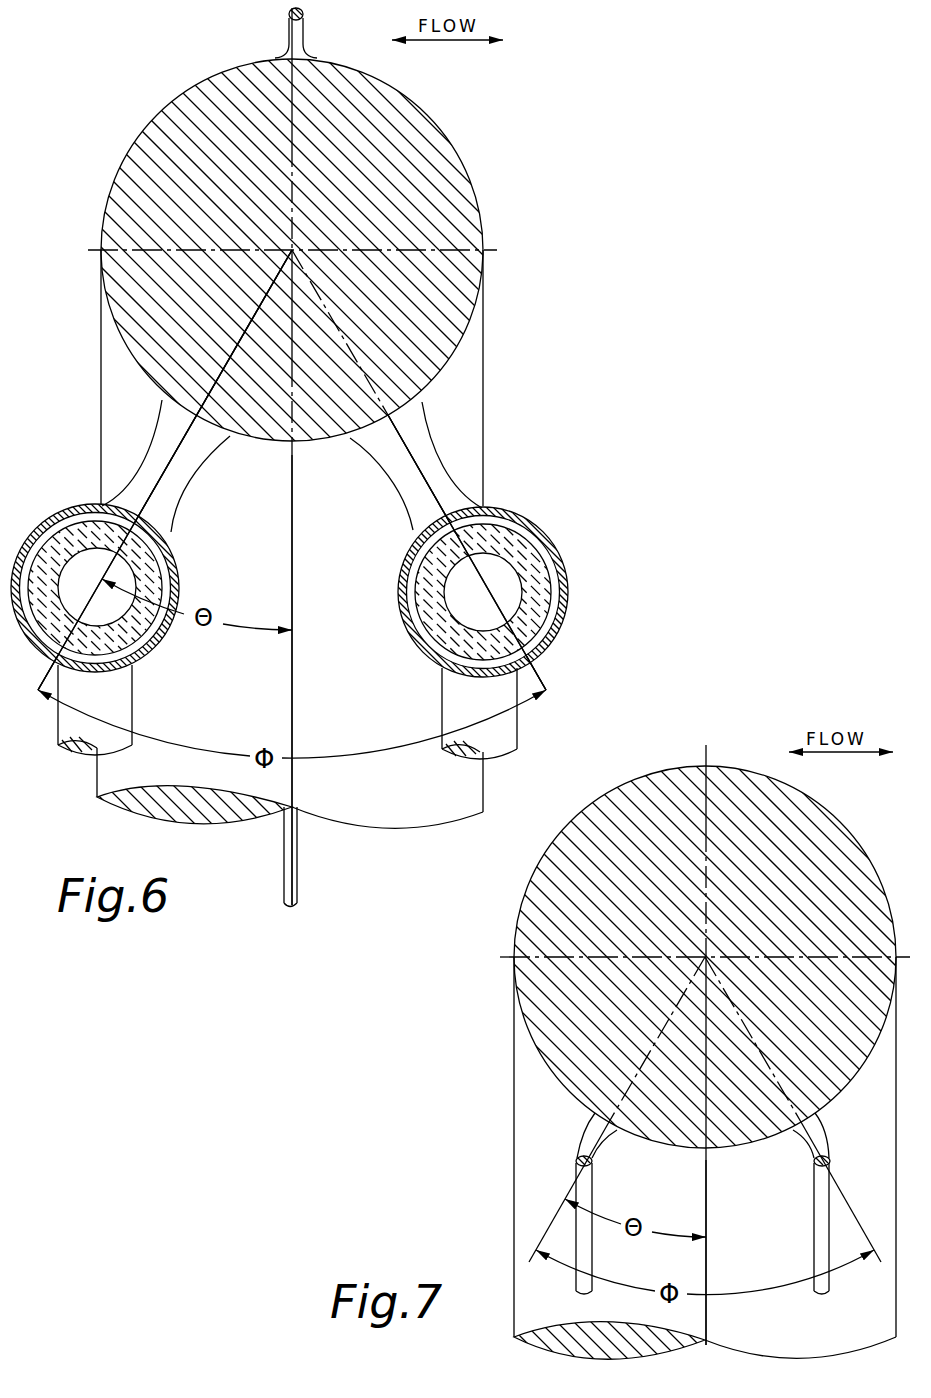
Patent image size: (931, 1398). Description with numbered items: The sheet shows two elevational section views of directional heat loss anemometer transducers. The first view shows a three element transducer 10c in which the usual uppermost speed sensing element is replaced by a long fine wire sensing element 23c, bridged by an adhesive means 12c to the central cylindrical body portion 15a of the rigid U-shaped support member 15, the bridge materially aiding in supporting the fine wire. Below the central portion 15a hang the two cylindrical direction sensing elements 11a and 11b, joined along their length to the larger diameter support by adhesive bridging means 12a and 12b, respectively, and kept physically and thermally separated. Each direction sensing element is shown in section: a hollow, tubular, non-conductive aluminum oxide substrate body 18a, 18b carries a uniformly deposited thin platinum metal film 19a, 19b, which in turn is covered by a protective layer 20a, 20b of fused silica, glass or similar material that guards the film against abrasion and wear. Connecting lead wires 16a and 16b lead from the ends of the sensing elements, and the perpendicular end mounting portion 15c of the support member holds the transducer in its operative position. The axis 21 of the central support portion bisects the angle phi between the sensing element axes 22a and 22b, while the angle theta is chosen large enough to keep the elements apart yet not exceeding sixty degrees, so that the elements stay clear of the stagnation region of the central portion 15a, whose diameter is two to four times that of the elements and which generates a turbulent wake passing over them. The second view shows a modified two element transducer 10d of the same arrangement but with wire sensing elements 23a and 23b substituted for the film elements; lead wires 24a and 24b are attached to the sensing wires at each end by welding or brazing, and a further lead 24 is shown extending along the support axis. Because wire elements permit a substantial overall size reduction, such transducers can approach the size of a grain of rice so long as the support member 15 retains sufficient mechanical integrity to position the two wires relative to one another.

In FIG. 6, the three element transducer 10c is at (111, 186).
In FIG. 7, the two element transducer 10d is at (817, 800).
In FIG. 6, the sensing element 11a is at (151, 522).
In FIG. 6, the sensing element 11b is at (521, 595).
In FIG. 6, the bridging means 12a is at (170, 425).
In FIG. 7, the bridging means 12a is at (600, 1130).
In FIG. 6, the bridging means 12b is at (392, 432).
In FIG. 7, the bridging means 12b is at (806, 1132).
In FIG. 6, the adhesive means 12c is at (305, 42).
In FIG. 6, the support member 15 is at (486, 194).
In FIG. 7, the support member 15 is at (753, 768).
In FIG. 6, the central cylindrical body portion 15a is at (470, 234).
In FIG. 7, the central cylindrical body portion 15a is at (843, 840).
In FIG. 6, the end mounting portion 15c is at (363, 805).
In FIG. 7, the end mounting portion 15c is at (530, 1215).
In FIG. 6, the connecting wire 16a is at (120, 693).
In FIG. 6, the connecting wire 16b is at (455, 702).
In FIG. 6, the substrate body 18a is at (68, 534).
In FIG. 6, the substrate body 18b is at (526, 550).
In FIG. 6, the platinum metal film 19a is at (166, 561).
In FIG. 6, the platinum metal film 19b is at (550, 570).
In FIG. 6, the protective coating layer 20a is at (176, 571).
In FIG. 6, the protective coating layer 20b is at (561, 592).
In FIG. 6, the axis of the central support portion 21 is at (289, 487).
In FIG. 7, the axis of the central support portion 21 is at (704, 749).
In FIG. 6, the sensing element axis 22a is at (36, 678).
In FIG. 7, the sensing element axis 22a is at (537, 1237).
In FIG. 6, the sensing element axis 22b is at (532, 676).
In FIG. 7, the sensing element axis 22b is at (858, 1214).
In FIG. 7, the wire sensing element 23a is at (571, 1160).
In FIG. 7, the wire sensing element 23b is at (812, 1163).
In FIG. 6, the fine wire sensing element 23c is at (284, 18).
In FIG. 6, the lead wire 24 is at (282, 890).
In FIG. 7, the lead wire 24a is at (594, 1186).
In FIG. 7, the lead wire 24b is at (814, 1215).